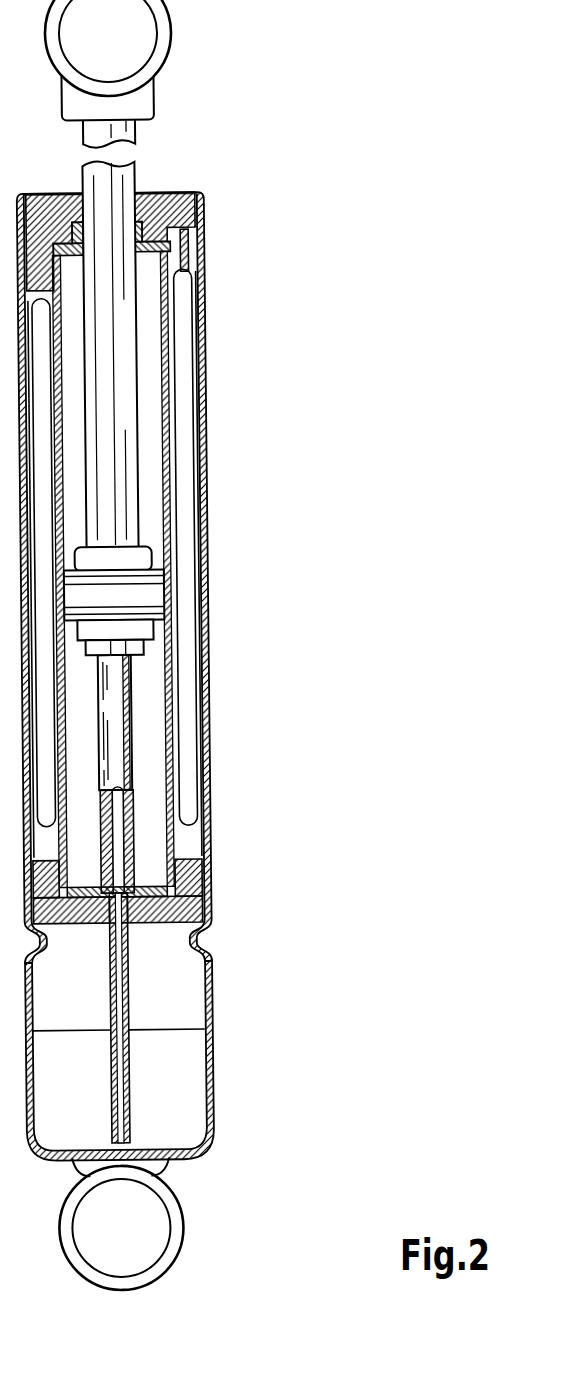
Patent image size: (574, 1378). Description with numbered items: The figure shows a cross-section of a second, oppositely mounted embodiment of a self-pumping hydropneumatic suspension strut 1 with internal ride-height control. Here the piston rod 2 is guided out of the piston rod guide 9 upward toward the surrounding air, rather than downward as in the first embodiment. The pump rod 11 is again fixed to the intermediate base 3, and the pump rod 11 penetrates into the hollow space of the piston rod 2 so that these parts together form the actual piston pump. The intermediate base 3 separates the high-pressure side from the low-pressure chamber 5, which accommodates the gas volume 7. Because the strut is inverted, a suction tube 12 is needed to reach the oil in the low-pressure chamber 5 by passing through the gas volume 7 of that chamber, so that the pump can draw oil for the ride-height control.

The suspension strut 1 is at (226, 543).
The piston rod 2 is at (113, 408).
The intermediate base 3 is at (198, 887).
The low-pressure chamber 5 is at (193, 1117).
The gas volume 7 is at (188, 975).
The piston rod guide 9 is at (180, 193).
The pump rod 11 is at (117, 732).
The suction tube 12 is at (128, 1065).